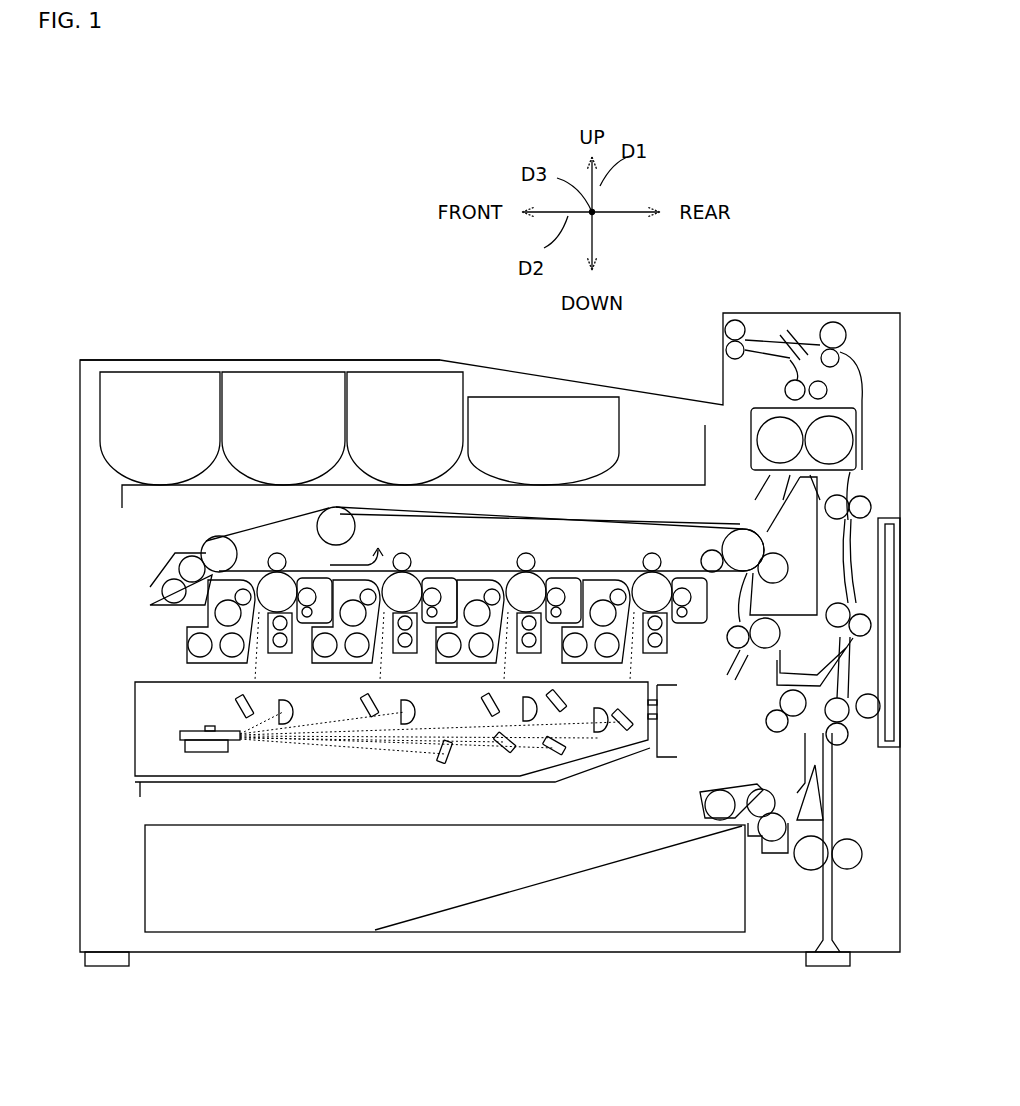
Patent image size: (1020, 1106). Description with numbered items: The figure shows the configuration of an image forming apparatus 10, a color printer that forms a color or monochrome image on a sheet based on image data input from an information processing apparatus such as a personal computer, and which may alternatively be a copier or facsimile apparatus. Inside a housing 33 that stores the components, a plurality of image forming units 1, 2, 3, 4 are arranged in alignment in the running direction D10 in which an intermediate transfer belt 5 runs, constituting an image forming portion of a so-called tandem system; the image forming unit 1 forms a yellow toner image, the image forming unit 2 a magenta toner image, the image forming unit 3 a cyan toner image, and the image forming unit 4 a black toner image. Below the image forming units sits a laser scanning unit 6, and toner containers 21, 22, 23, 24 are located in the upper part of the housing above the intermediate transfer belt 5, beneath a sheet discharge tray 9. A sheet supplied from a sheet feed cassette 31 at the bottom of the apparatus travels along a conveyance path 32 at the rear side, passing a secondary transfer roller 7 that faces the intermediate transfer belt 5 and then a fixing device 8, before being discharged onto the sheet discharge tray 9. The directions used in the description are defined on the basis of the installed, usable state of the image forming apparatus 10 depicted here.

The image forming unit 1 is at (287, 557).
The image forming unit 2 is at (424, 562).
The image forming unit 3 is at (544, 561).
The image forming unit 4 is at (668, 560).
The intermediate transfer belt 5 is at (244, 528).
The laser scanning unit 6 is at (135, 708).
The secondary transfer roller 7 is at (782, 584).
The fixing device 8 is at (858, 420).
The sheet discharge tray 9 is at (636, 393).
The image forming apparatus 10 is at (146, 308).
The toner container 21 is at (130, 372).
The toner container 22 is at (247, 372).
The toner container 23 is at (355, 372).
The toner container 24 is at (578, 397).
The sheet feed cassette 31 is at (145, 880).
The conveyance path 32 is at (763, 706).
The housing 33 is at (80, 595).
The running direction D10 is at (370, 542).